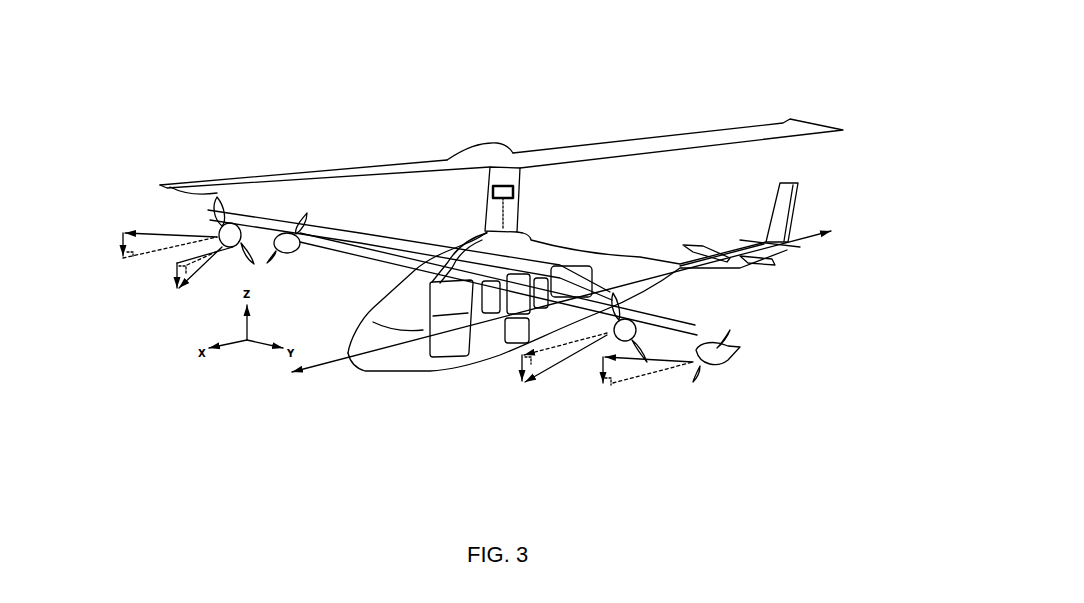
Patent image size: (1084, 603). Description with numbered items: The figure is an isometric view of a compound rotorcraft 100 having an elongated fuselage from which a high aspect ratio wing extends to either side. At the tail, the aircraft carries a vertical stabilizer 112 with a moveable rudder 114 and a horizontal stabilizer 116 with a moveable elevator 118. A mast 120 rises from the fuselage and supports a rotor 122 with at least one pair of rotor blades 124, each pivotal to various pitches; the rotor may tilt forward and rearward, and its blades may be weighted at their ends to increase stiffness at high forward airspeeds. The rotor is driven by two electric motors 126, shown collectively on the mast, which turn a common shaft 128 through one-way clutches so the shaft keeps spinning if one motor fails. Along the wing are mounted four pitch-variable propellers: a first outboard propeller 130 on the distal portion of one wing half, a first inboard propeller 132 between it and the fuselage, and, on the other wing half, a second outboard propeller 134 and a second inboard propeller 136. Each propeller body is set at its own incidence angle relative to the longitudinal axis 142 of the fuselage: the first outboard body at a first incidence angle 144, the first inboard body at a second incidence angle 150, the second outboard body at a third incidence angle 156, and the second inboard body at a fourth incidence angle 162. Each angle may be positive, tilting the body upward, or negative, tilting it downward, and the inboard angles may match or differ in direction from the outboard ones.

The compound rotorcraft 100 is at (528, 440).
The vertical stabilizer 112 is at (764, 205).
The rudder 114 is at (801, 205).
The horizontal stabilizer 116 is at (742, 271).
The elevator 118 is at (765, 262).
The mast 120 is at (531, 196).
The rotor 122 is at (596, 140).
The rotor blades 124 is at (316, 166).
The electric motors 126 is at (506, 180).
The common shaft 128 is at (501, 215).
The first outboard propeller 130 is at (247, 216).
The first inboard propeller 132 is at (315, 225).
The second outboard propeller 134 is at (743, 348).
The second inboard propeller 136 is at (652, 319).
The longitudinal axis 142 is at (554, 315).
The first incidence angle 144 is at (178, 232).
The second incidence angle 150 is at (219, 236).
The third incidence angle 156 is at (656, 375).
The fourth incidence angle 162 is at (577, 356).